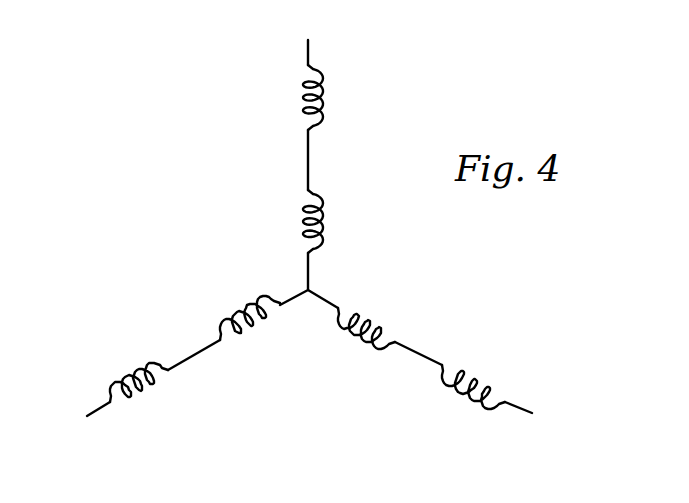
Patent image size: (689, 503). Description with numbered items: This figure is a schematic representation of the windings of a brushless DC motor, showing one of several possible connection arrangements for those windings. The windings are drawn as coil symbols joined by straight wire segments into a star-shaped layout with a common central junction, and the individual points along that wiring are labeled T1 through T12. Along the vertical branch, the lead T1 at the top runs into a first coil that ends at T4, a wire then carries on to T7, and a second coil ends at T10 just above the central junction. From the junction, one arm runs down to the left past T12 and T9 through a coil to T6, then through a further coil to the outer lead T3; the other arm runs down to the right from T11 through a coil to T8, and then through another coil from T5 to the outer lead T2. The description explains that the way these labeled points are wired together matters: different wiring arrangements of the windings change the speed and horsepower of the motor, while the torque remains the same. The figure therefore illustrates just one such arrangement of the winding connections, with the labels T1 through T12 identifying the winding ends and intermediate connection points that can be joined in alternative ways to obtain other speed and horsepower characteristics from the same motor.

The motor winding terminal T1 is at (305, 34).
The motor winding terminal T2 is at (527, 421).
The motor winding terminal T3 is at (112, 398).
The motor winding terminal T4 is at (292, 106).
The motor winding terminal T5 is at (473, 373).
The motor winding terminal T6 is at (194, 367).
The motor winding terminal T7 is at (282, 162).
The motor winding terminal T8 is at (390, 336).
The motor winding terminal T9 is at (250, 330).
The motor winding terminal T10 is at (281, 223).
The motor winding terminal T11 is at (346, 291).
The motor winding terminal T12 is at (300, 293).